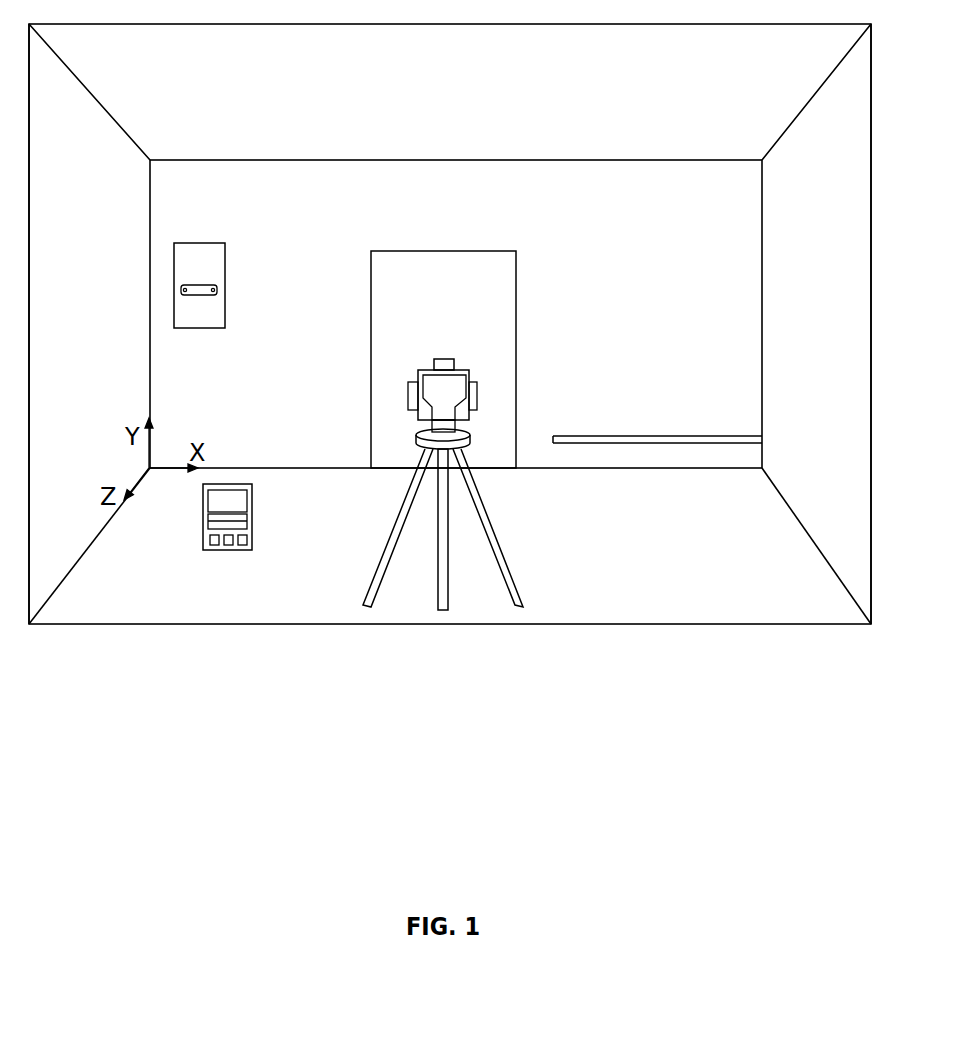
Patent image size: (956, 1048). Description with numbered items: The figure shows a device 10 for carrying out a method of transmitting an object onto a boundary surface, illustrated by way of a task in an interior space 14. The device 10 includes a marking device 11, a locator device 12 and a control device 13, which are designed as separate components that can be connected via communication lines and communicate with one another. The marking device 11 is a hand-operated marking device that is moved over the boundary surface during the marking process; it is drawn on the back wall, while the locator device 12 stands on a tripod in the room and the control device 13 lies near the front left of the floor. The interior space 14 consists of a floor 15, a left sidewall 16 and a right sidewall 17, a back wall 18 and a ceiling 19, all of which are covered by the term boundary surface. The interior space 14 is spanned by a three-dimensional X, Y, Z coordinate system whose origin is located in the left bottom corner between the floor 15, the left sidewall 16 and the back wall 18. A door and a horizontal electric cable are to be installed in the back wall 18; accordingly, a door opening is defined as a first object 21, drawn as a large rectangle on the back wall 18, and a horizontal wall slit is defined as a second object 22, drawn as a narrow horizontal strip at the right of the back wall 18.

The device 10 is at (216, 657).
The marking device 11 is at (193, 305).
The locator device 12 is at (479, 447).
The control device 13 is at (220, 507).
The interior space 14 is at (736, 601).
The floor 15 is at (765, 545).
The left sidewall 16 is at (90, 315).
The right sidewall 17 is at (819, 315).
The back wall 18 is at (685, 388).
The ceiling 19 is at (461, 106).
The first object 21 is at (440, 251).
The second object 22 is at (623, 436).